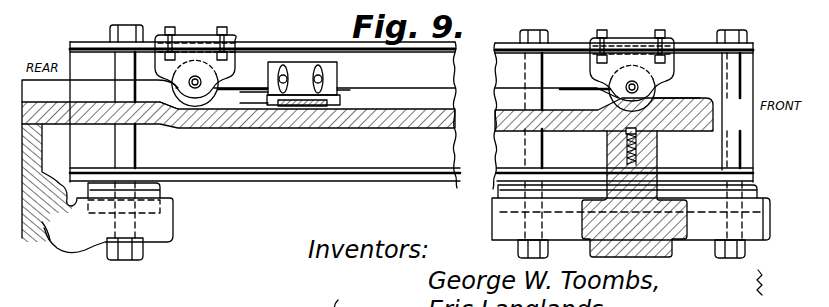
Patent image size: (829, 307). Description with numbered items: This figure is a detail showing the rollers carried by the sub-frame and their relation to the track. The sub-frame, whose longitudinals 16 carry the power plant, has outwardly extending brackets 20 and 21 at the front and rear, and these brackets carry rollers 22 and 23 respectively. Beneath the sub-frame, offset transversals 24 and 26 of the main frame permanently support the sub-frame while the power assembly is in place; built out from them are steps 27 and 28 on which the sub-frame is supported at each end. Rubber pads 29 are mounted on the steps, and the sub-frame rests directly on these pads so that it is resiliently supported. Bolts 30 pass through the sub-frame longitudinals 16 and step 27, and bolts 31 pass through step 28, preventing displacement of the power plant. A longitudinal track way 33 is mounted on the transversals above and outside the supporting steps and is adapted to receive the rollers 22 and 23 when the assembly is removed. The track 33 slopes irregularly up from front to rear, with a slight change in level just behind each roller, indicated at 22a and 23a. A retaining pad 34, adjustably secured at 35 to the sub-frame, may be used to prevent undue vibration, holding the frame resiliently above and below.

The longitudinals 16 is at (290, 173).
The bracket 20 is at (626, 41).
The bracket 21 is at (195, 38).
The roller 22 is at (654, 90).
The change in level 22a is at (592, 126).
The roller 23 is at (216, 84).
The change in level 23a is at (171, 106).
The transversal 24 is at (650, 240).
The transversal 26 is at (32, 232).
The step 27 is at (512, 222).
The step 28 is at (75, 228).
The rubber pad 29 is at (162, 188).
The bolt 30 is at (530, 72).
The bolt 31 is at (123, 67).
The track way 33 is at (386, 112).
The retaining pad 34 is at (303, 107).
The adjustable securing means 35 is at (323, 79).